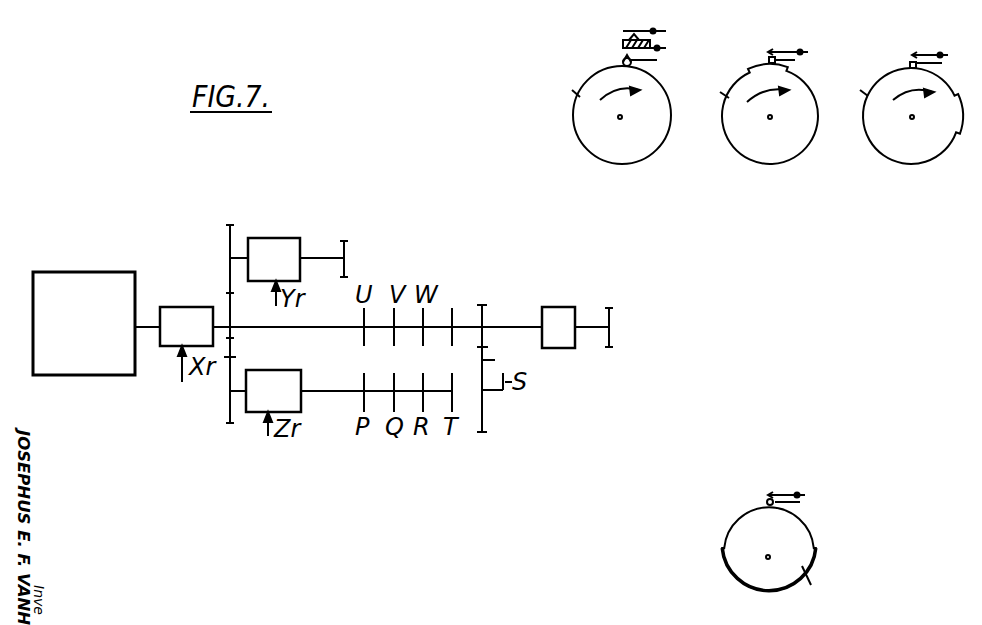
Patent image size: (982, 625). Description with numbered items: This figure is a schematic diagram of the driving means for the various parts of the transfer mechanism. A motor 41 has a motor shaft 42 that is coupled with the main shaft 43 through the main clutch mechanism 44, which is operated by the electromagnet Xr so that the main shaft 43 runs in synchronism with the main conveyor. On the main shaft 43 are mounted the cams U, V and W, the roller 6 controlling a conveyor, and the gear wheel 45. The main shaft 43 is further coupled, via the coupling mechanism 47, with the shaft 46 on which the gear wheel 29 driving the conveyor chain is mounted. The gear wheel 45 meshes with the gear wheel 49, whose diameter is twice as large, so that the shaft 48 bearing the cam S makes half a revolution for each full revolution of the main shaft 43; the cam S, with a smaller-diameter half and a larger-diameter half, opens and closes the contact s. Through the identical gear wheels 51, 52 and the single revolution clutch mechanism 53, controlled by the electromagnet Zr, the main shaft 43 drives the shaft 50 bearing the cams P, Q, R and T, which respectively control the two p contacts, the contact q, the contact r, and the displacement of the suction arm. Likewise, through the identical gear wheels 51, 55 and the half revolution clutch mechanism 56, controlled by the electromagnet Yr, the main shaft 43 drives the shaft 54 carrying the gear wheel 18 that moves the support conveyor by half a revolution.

The motor 41 is at (84, 323).
The motor shaft 42 is at (153, 325).
The main shaft 43 is at (226, 324).
The main clutch mechanism 44 is at (186, 326).
The gear wheel 45 is at (481, 356).
The shaft 46 is at (583, 333).
The coupling mechanism 47 is at (558, 327).
The shaft 48 is at (490, 390).
The gear wheel 49 is at (504, 357).
The shaft 50 is at (328, 392).
The gear wheel 51 is at (232, 345).
The gear wheel 52 is at (229, 404).
The single revolution clutch mechanism 53 is at (273, 391).
The shaft 54 is at (325, 258).
The gear wheel 55 is at (229, 246).
The half revolution clutch mechanism 56 is at (274, 259).
The gear wheel 18 is at (348, 243).
The gear wheel 29 is at (611, 314).
The roller 6 is at (452, 313).